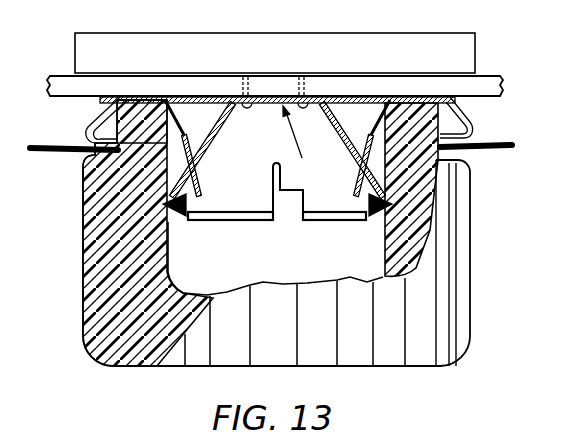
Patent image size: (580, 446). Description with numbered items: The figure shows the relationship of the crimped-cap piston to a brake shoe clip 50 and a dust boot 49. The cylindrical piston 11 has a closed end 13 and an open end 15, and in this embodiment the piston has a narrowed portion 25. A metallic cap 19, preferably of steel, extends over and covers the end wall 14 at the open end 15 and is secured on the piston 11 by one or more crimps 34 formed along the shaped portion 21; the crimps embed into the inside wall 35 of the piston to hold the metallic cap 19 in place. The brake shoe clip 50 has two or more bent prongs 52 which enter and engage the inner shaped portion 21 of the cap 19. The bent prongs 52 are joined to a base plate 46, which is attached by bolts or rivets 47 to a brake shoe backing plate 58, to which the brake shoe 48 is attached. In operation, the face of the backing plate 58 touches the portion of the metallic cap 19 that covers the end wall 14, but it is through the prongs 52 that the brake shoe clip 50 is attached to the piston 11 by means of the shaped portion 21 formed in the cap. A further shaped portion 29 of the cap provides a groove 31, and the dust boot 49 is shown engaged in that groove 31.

The cylindrical piston 11 is at (472, 260).
The closed end 13 is at (278, 360).
The end wall 14 is at (405, 97).
The open end 15 is at (268, 275).
The metallic cap 19 is at (190, 130).
The shaped portion 21 is at (90, 190).
The narrowed portion 25 is at (130, 110).
The shaped portion 29 is at (97, 115).
The groove 31 is at (87, 163).
The crimps 34 is at (93, 233).
The inside wall 35 is at (88, 276).
The base plate 46 is at (265, 105).
The bolts or rivets 47 is at (247, 106).
The brake shoe 48 is at (477, 50).
The dust boot 49 is at (512, 147).
The brake shoe clip 50 is at (300, 141).
The bent prongs 52 is at (198, 178).
The brake shoe backing plate 58 is at (500, 76).